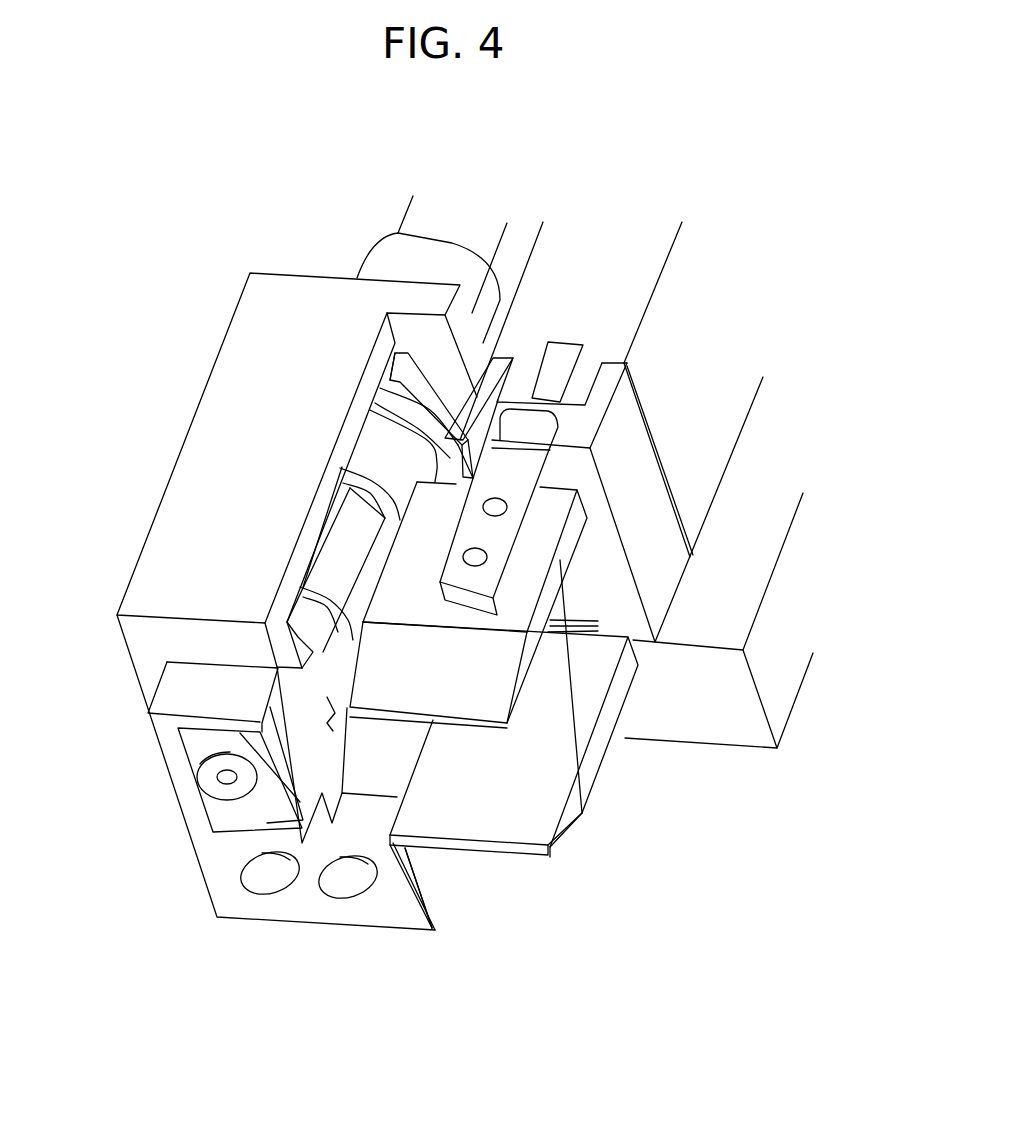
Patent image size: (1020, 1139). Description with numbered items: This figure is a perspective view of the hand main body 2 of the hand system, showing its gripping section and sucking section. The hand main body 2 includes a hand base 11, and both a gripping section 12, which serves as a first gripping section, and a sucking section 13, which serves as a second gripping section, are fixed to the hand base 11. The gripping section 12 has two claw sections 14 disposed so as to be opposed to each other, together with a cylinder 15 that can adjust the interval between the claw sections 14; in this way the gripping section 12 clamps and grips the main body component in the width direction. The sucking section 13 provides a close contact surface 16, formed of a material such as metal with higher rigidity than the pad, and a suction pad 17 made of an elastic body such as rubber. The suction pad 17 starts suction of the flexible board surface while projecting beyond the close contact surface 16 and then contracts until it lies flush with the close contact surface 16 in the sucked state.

The hand main body 2 is at (123, 270).
The hand base 11 is at (773, 665).
The gripping section 12 is at (583, 815).
The sucking section 13 is at (167, 797).
The claw sections 14 is at (472, 682).
The cylinder 15 is at (703, 397).
The close contact surface 16 is at (235, 817).
The suction pad 17 is at (218, 783).